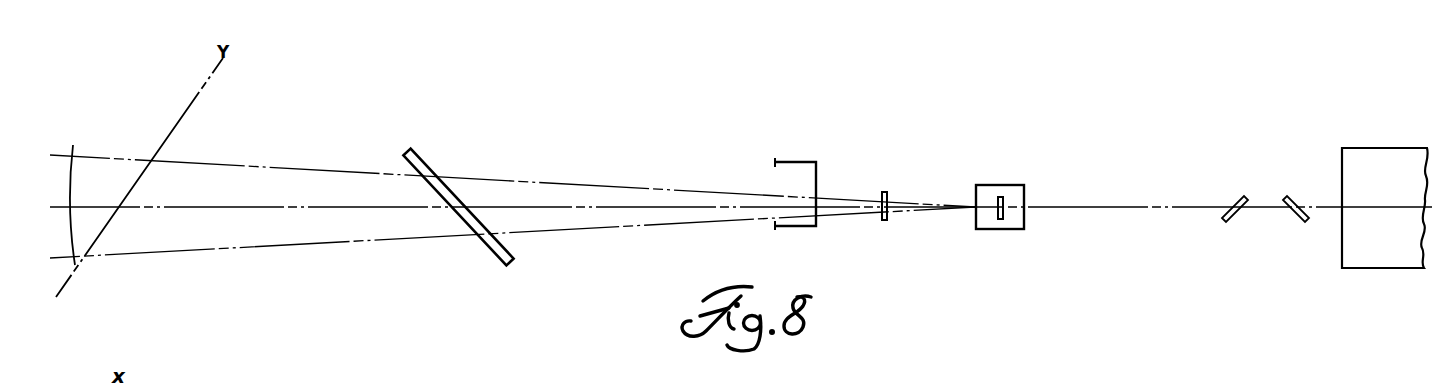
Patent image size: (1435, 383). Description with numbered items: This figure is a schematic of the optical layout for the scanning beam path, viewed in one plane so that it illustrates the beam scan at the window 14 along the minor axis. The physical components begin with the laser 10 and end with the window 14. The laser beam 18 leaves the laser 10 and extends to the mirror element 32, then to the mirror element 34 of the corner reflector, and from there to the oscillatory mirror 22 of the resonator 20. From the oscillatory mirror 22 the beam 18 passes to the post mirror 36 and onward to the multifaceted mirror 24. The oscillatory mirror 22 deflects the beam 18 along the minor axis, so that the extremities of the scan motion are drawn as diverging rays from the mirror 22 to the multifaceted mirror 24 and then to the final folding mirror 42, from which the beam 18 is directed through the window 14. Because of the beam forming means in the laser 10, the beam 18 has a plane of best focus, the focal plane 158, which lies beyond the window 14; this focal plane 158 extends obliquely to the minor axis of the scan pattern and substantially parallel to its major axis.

The laser 10 is at (1390, 148).
The window 14 is at (173, 137).
The laser beam 18 is at (623, 187).
The resonator 20 is at (1018, 198).
The oscillatory mirror 22 is at (1003, 200).
The multifaceted mirror 24 is at (818, 175).
The mirror element 32 is at (1300, 172).
The mirror element 34 is at (1235, 200).
The post mirror 36 is at (887, 195).
The final folding mirror 42 is at (417, 166).
The focal plane 158 is at (73, 170).